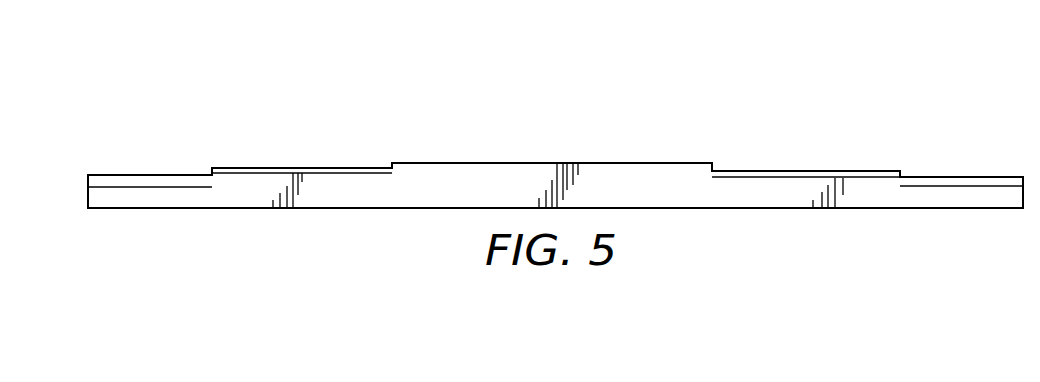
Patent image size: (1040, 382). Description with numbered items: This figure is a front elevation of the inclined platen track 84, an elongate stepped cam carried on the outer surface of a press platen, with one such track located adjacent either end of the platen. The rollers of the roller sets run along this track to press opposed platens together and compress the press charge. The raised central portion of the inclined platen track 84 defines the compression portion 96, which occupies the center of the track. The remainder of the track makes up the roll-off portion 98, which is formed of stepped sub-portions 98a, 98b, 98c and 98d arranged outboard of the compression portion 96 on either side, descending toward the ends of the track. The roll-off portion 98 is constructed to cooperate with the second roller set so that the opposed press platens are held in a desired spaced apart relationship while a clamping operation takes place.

The inclined platen track 84 is at (867, 208).
The compression portion 96 is at (553, 161).
The roll-off portion 98 is at (358, 160).
The roll-off sub-portion 98a is at (1017, 161).
The roll-off sub-portion 98b is at (325, 168).
The roll-off sub-portion 98c is at (850, 155).
The roll-off sub-portion 98d is at (172, 177).